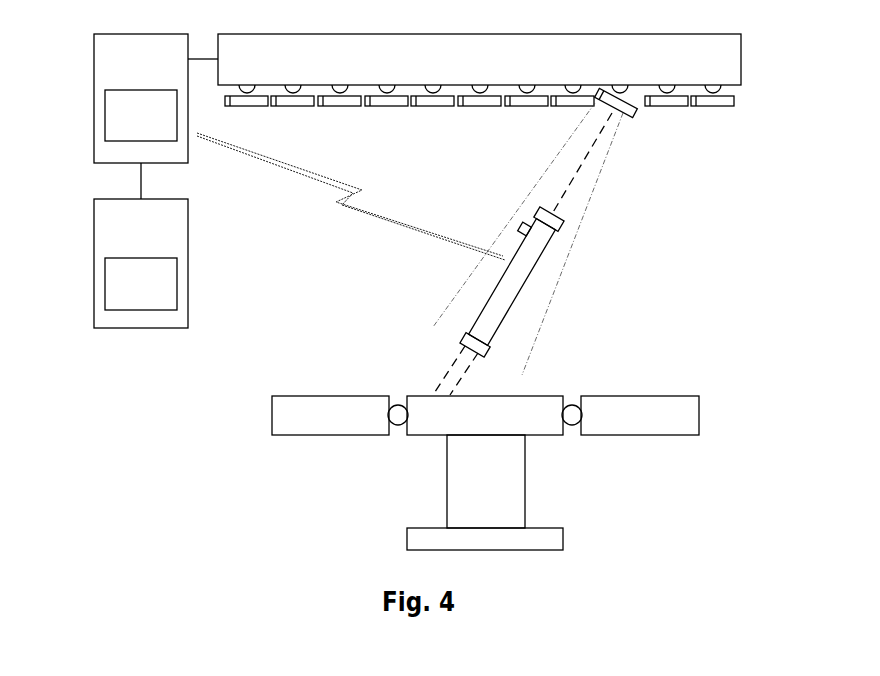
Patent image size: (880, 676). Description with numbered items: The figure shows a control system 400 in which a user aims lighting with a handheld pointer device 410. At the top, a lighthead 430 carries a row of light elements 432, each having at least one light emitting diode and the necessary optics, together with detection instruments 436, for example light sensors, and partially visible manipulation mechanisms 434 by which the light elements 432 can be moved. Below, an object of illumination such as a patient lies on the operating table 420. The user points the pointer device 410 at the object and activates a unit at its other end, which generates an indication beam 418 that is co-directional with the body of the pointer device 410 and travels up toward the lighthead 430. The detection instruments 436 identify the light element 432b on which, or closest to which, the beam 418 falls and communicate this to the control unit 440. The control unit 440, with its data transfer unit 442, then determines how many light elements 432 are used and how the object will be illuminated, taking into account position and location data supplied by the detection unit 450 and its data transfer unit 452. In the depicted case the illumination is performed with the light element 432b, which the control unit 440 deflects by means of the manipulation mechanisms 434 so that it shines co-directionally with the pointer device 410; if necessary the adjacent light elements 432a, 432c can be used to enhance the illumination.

The control system 400 is at (105, 396).
The pointer device 410 is at (502, 299).
The indication beam 418 is at (588, 155).
The operating table 420 is at (272, 415).
The lighthead 430 is at (741, 56).
The light elements 432 is at (428, 107).
The adjacent light element 432a is at (557, 107).
The light element 432b is at (633, 116).
The adjacent light element 432c is at (697, 107).
The manipulation mechanisms 434 is at (296, 93).
The detection instruments 436 is at (367, 107).
The control unit 440 is at (95, 66).
The data transfer unit 442 is at (105, 128).
The detection unit 450 is at (95, 224).
The data transfer unit 452 is at (105, 283).